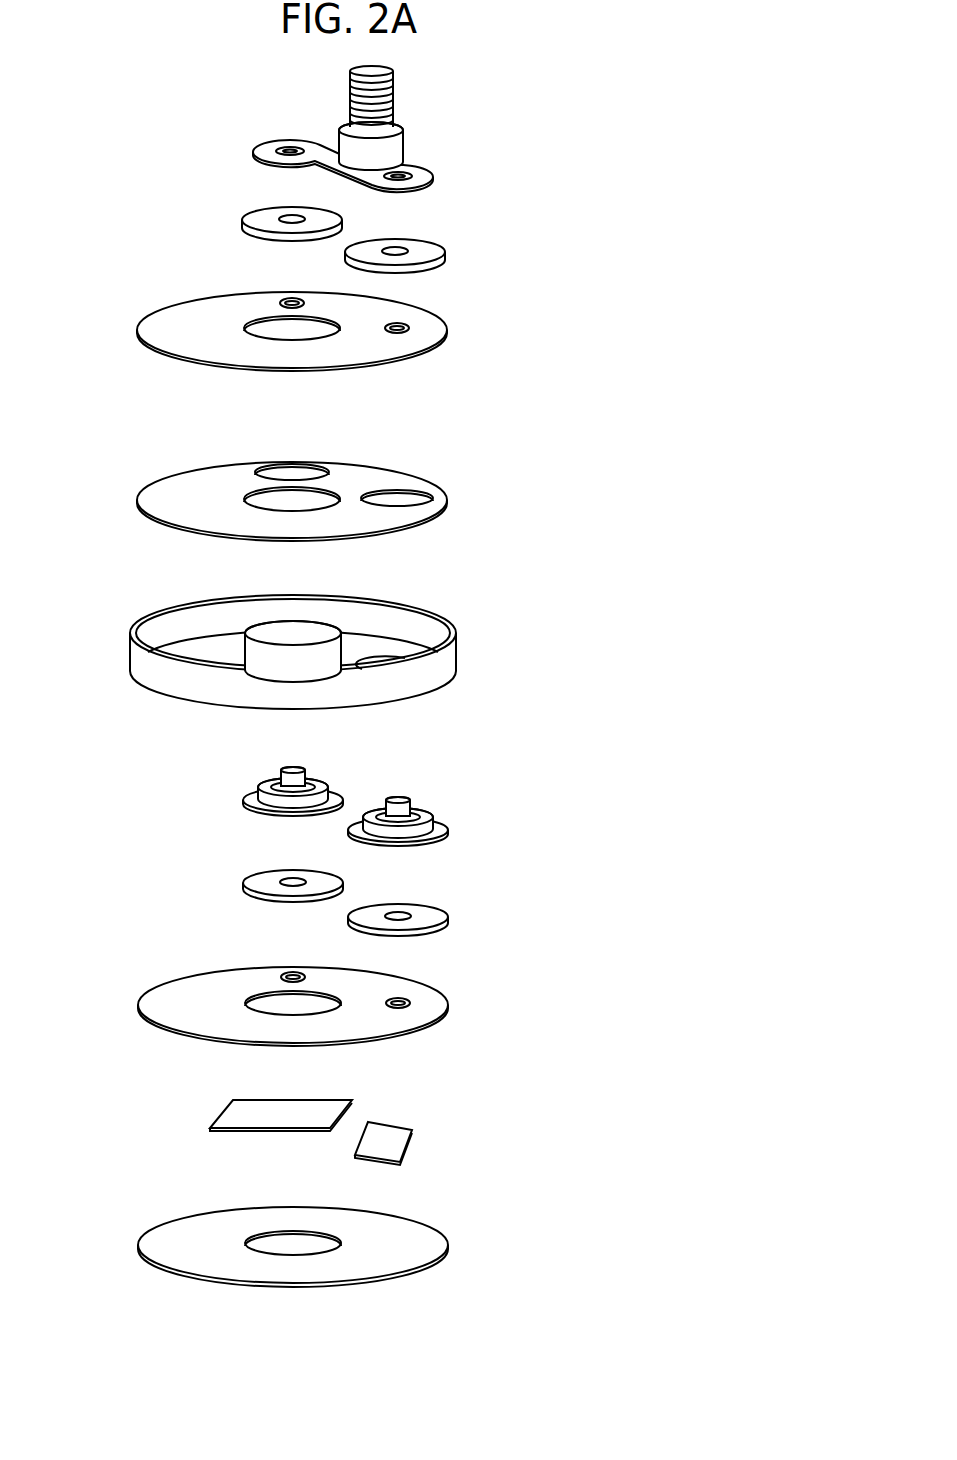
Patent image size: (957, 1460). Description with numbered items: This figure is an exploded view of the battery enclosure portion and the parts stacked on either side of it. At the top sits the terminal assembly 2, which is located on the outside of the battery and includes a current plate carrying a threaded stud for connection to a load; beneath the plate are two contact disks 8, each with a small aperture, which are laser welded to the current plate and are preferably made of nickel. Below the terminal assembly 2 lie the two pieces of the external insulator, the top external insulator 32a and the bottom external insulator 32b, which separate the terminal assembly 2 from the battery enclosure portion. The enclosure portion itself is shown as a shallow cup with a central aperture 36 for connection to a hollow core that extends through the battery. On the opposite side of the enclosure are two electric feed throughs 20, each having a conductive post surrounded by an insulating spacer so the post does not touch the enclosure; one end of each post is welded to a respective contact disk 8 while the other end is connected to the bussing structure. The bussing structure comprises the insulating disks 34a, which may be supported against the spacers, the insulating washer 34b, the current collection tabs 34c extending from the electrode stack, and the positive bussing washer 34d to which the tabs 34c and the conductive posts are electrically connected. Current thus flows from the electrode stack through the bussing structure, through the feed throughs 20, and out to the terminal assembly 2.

The terminal assembly 2 is at (438, 172).
The contact disk 8 is at (242, 220).
The top external insulator 32a is at (436, 330).
The bottom external insulator 32b is at (436, 500).
The central aperture 36 is at (467, 653).
The electric feed through 20 is at (240, 800).
The insulating disk 34a is at (240, 893).
The insulating washer 34b is at (436, 1005).
The current collection tab 34c is at (237, 1114).
The positive bussing washer 34d is at (436, 1245).